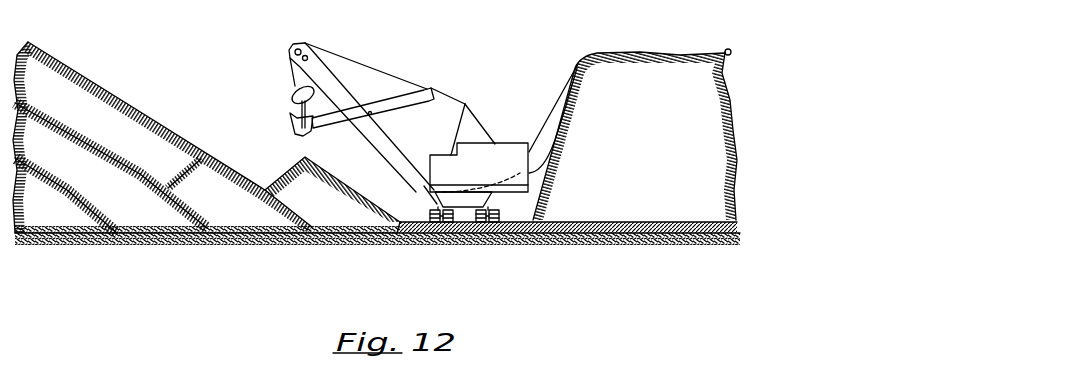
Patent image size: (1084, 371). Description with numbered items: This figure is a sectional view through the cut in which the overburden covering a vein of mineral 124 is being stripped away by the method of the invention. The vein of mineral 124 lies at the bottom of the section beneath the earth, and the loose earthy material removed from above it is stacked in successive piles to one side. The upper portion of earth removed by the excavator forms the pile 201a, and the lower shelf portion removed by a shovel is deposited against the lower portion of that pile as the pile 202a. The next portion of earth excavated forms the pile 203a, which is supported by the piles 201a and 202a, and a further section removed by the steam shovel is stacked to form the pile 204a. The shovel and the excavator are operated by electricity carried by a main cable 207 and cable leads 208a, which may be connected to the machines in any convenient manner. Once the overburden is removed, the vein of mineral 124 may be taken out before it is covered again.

The vein of mineral 124 is at (545, 233).
The pile of earth 201a is at (38, 120).
The pile of earth 202a is at (250, 212).
The pile of earth 203a is at (130, 125).
The pile of earth 204a is at (333, 203).
The main cable 207 is at (728, 49).
The cable leads 208a is at (590, 53).